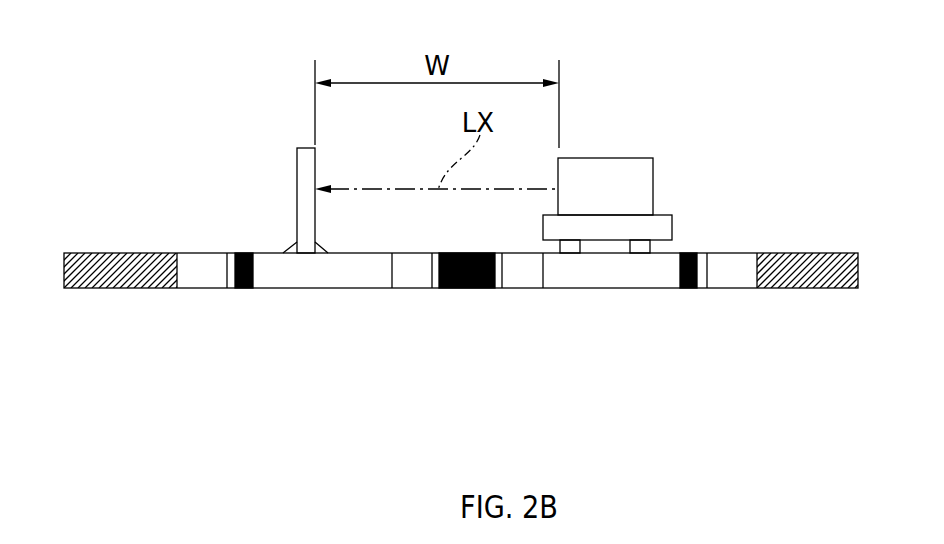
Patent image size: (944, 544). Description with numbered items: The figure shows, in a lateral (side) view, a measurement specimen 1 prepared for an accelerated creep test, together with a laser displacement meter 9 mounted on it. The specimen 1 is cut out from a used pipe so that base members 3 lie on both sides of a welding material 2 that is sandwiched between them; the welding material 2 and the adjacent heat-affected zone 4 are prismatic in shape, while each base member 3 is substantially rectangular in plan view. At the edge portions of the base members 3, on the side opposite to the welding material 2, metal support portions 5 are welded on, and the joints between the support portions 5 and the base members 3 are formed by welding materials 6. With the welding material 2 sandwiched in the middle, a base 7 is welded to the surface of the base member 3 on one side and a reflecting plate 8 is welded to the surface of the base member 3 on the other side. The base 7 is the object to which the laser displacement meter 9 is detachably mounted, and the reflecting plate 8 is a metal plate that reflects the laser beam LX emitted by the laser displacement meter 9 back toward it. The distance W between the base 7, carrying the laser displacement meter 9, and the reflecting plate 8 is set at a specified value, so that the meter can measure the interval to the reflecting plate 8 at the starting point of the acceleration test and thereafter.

The specimen 1 is at (365, 337).
The welding material 2 is at (462, 288).
The base member 3 is at (303, 290).
The heat-affected zone 4 is at (436, 280).
The support portion 5 is at (200, 290).
The welding material 6 is at (245, 290).
The base 7 is at (672, 226).
The reflecting plate 8 is at (297, 168).
The laser displacement meter 9 is at (618, 158).